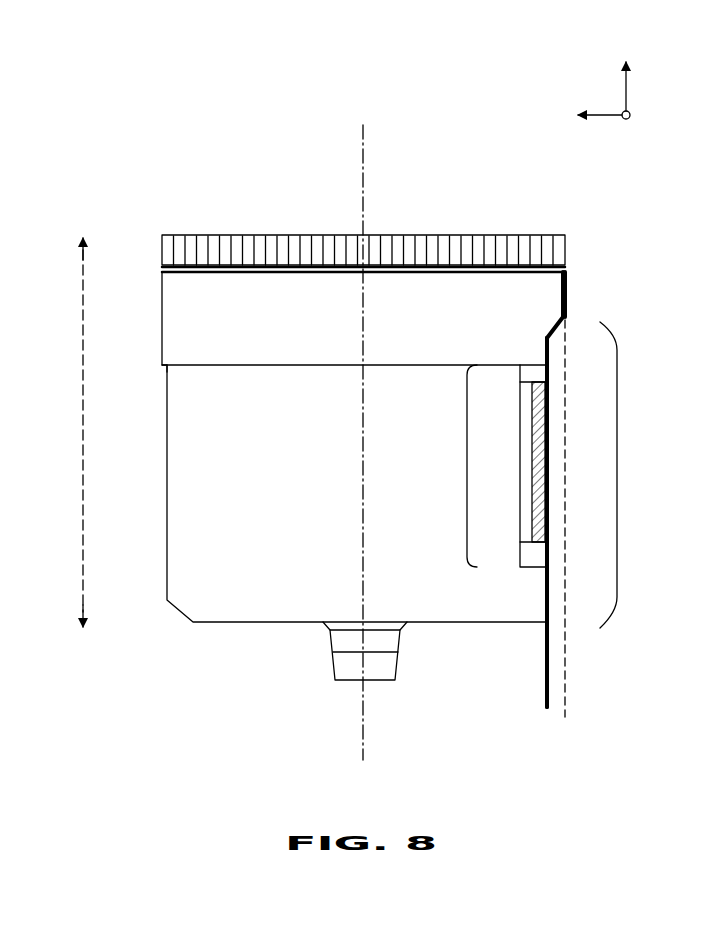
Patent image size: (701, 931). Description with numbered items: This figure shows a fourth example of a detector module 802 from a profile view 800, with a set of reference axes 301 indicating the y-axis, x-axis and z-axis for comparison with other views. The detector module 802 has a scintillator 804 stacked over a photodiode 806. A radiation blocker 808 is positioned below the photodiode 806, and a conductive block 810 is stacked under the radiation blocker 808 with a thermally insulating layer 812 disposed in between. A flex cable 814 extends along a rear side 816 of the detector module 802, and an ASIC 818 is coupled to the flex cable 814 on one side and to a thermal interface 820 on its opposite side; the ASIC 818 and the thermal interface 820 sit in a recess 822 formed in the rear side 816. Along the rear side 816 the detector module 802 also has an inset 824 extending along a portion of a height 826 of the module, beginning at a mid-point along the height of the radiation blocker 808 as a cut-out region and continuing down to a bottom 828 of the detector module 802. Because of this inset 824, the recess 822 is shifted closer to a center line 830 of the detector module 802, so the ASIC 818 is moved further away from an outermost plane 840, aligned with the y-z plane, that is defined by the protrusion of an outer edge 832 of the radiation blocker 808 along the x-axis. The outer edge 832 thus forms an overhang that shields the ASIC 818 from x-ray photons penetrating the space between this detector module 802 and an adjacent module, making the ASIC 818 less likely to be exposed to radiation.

The profile view 800 is at (243, 68).
The set of reference axes 301 is at (600, 65).
The detector module 802 is at (217, 178).
The scintillator 804 is at (228, 237).
The photodiode 806 is at (160, 268).
The radiation blocker 808 is at (362, 318).
The conductive block 810 is at (356, 493).
The thermally insulating layer 812 is at (160, 365).
The flex cable 814 is at (546, 685).
The rear side 816 is at (656, 352).
The ASIC 818 is at (548, 520).
The thermal interface 820 is at (528, 450).
The recess 822 is at (467, 467).
The inset 824 is at (617, 473).
The height 826 is at (85, 425).
The bottom 828 is at (258, 655).
The center line 830 is at (363, 155).
The outer edge 832 is at (565, 296).
The outermost plane 840 is at (565, 642).